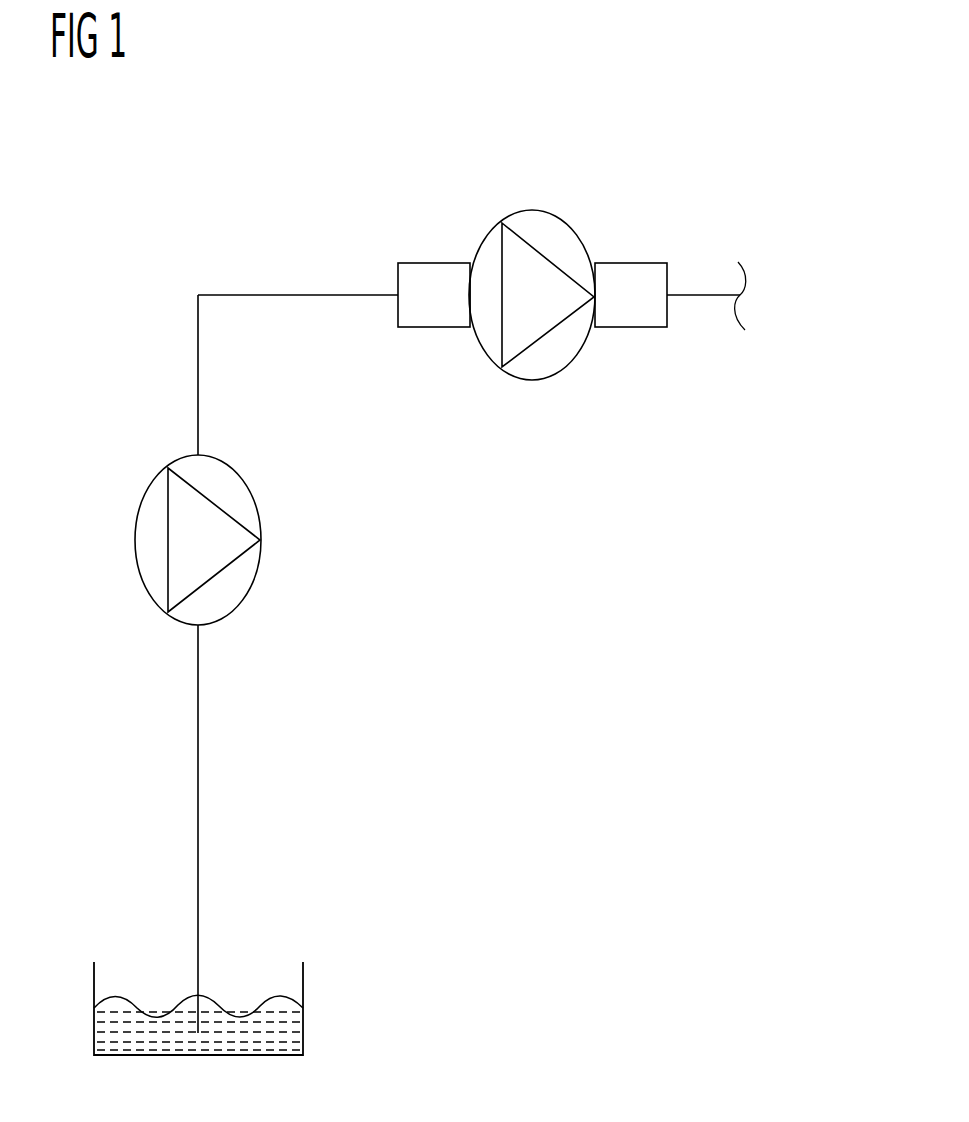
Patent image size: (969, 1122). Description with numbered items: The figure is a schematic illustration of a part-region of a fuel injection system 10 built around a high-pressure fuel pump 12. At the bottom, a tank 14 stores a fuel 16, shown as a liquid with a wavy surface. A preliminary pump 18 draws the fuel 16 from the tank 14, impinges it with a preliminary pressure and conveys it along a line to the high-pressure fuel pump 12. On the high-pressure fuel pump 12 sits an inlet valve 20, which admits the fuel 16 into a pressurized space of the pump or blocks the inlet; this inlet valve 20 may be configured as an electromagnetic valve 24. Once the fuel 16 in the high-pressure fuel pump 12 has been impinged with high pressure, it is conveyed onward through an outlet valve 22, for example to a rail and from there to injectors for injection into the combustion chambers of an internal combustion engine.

The fuel injection system 10 is at (750, 212).
The high-pressure fuel pump 12 is at (545, 353).
The tank 14 is at (303, 982).
The fuel 16 is at (145, 1035).
The preliminary pump 18 is at (148, 537).
The inlet valve 20 is at (418, 310).
The outlet valve 22 is at (635, 310).
The electromagnetic valve 24 is at (455, 308).